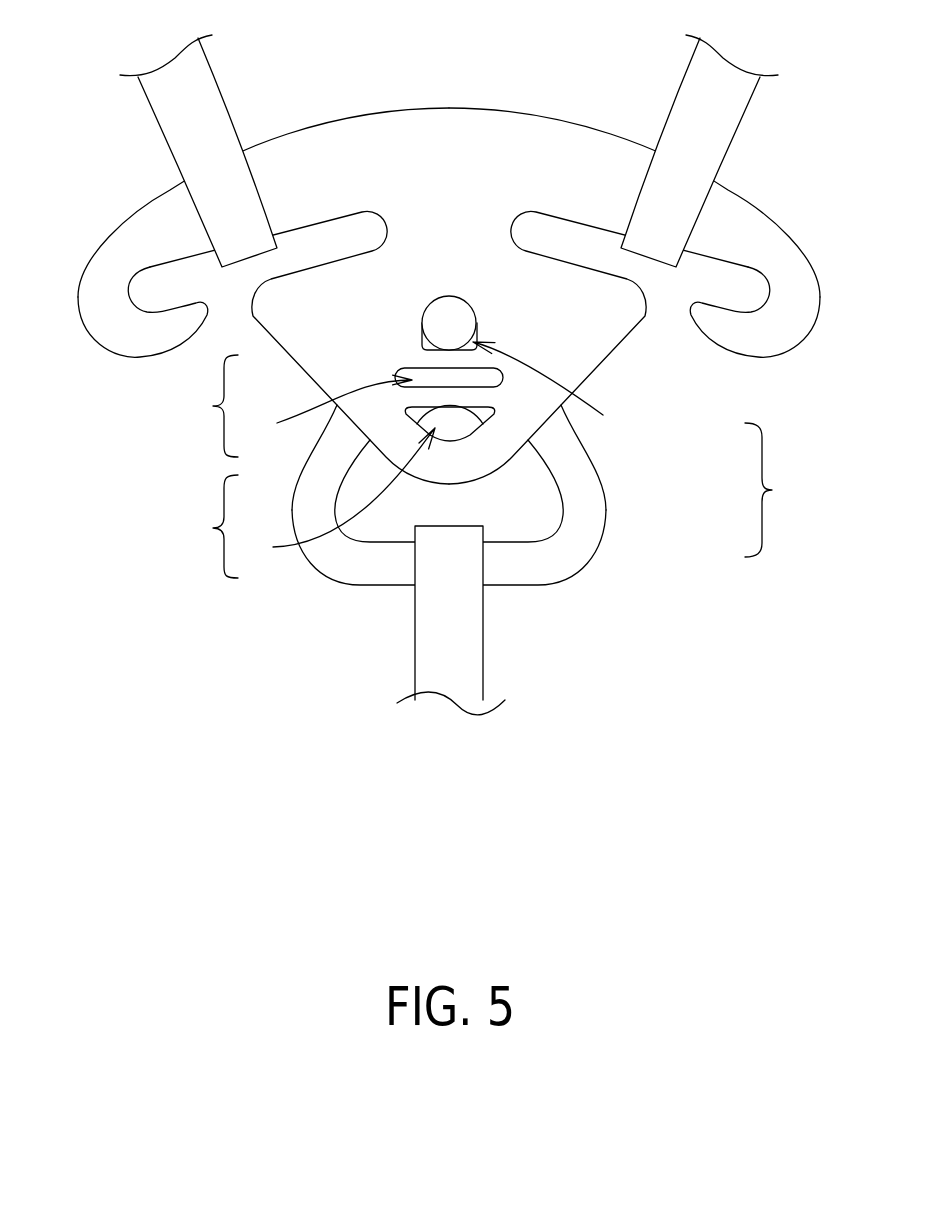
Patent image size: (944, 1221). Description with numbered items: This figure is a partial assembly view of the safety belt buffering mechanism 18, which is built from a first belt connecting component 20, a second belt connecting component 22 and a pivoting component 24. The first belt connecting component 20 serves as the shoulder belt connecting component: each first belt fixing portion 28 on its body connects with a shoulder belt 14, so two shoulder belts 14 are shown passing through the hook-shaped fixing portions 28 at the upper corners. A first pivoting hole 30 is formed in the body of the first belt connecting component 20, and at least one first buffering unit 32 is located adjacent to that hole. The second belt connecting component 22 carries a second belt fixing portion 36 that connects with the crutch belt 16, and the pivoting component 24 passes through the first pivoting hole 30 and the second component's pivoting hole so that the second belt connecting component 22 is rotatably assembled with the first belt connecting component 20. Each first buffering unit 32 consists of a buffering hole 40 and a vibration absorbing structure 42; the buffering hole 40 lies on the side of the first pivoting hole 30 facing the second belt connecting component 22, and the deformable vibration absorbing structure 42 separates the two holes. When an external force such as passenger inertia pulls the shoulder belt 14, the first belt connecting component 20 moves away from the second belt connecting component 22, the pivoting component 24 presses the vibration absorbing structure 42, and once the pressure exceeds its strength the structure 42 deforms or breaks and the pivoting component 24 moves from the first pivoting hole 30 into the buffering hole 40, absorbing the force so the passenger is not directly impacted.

The shoulder belt 14 is at (207, 102).
The crutch belt 16 is at (433, 643).
The safety belt buffering mechanism 18 is at (772, 490).
The first belt connecting component 20 is at (597, 340).
The second belt connecting component 22 is at (577, 523).
The pivoting component 24 is at (450, 313).
The first belt fixing portion 28 is at (150, 233).
The first pivoting hole 30 is at (553, 396).
The first buffering unit 32 is at (213, 528).
The second belt fixing portion 36 is at (550, 567).
The buffering hole 40 is at (335, 474).
The vibration absorbing structure 42 is at (438, 360).